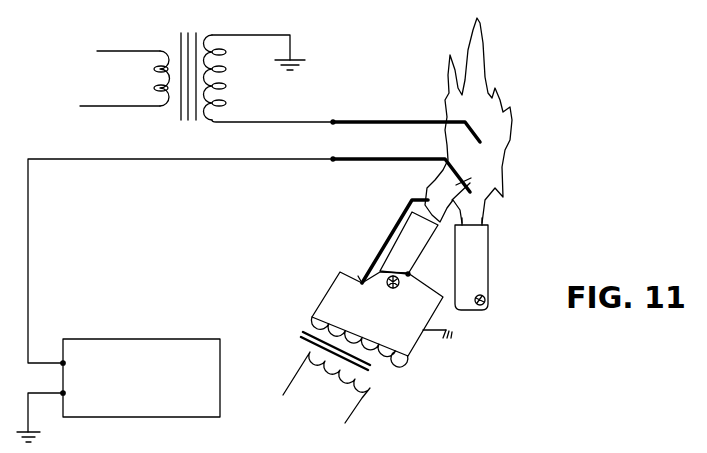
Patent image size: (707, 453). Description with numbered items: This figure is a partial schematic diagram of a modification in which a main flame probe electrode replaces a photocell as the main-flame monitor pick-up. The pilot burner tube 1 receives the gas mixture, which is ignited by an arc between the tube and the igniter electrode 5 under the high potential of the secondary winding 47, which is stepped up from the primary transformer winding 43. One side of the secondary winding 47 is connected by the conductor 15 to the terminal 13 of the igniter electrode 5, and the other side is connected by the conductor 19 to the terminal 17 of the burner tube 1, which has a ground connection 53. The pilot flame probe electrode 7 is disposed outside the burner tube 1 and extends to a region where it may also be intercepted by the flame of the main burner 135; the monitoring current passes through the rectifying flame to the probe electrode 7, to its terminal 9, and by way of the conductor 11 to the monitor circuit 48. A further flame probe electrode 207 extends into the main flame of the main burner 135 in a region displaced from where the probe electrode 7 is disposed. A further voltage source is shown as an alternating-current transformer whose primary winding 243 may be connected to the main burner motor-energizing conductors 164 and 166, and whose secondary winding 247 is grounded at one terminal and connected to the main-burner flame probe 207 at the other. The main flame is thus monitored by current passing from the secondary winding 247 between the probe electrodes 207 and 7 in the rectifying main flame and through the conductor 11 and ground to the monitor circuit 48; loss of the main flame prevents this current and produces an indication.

The pilot burner tube 1 is at (418, 266).
The igniter electrode 5 is at (410, 199).
The pilot flame probe electrode 7 is at (390, 161).
The terminal of the probe electrode 9 is at (333, 160).
The conductor 11 is at (28, 262).
The terminal of the igniter electrode 13 is at (360, 276).
The conductor 15 is at (318, 306).
The terminal of the burner tube 17 is at (399, 286).
The conductor 19 is at (410, 346).
The primary transformer winding 43 is at (358, 400).
The secondary winding 47 is at (410, 358).
The monitor circuit 48 is at (160, 339).
The ground connection 53 is at (446, 334).
The main burner 135 is at (488, 252).
The main burner motor-energizing conductor 164 is at (107, 107).
The main burner motor-energizing conductor 166 is at (110, 51).
The main-burner flame probe electrode 207 is at (408, 121).
The primary winding 243 is at (161, 79).
The secondary winding 247 is at (220, 88).